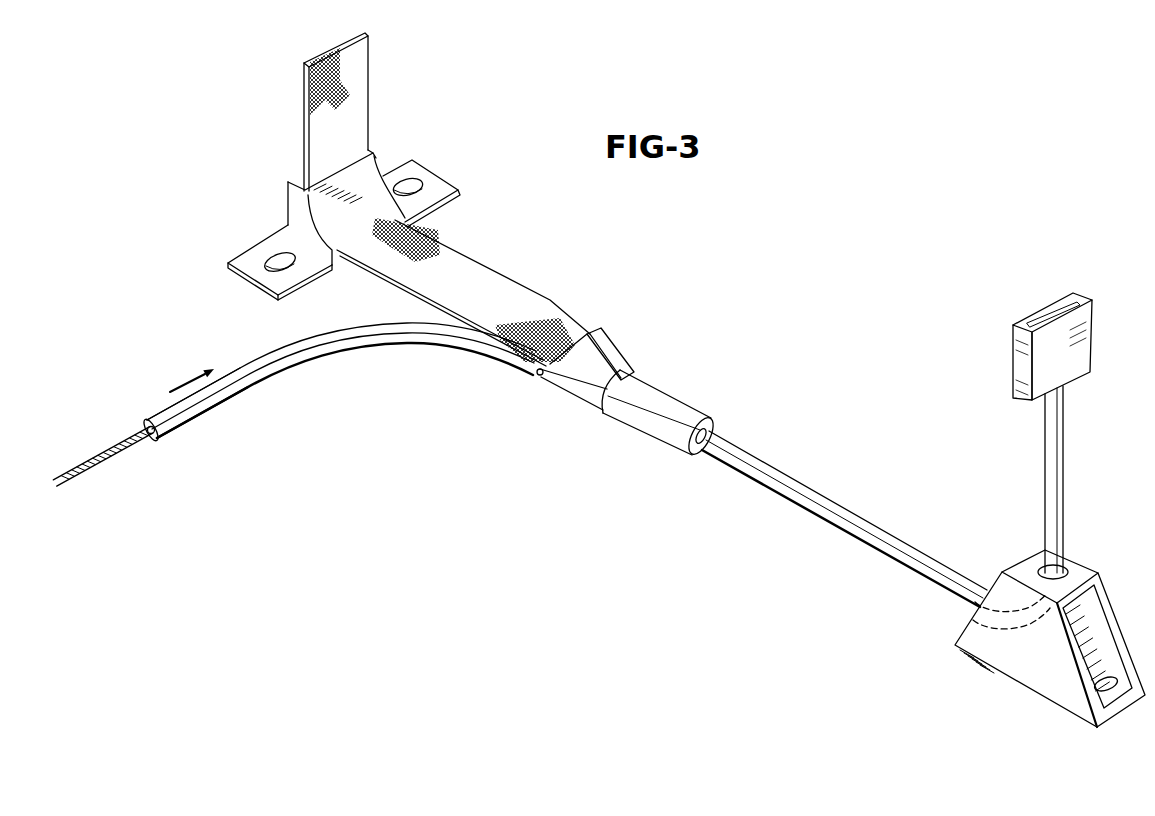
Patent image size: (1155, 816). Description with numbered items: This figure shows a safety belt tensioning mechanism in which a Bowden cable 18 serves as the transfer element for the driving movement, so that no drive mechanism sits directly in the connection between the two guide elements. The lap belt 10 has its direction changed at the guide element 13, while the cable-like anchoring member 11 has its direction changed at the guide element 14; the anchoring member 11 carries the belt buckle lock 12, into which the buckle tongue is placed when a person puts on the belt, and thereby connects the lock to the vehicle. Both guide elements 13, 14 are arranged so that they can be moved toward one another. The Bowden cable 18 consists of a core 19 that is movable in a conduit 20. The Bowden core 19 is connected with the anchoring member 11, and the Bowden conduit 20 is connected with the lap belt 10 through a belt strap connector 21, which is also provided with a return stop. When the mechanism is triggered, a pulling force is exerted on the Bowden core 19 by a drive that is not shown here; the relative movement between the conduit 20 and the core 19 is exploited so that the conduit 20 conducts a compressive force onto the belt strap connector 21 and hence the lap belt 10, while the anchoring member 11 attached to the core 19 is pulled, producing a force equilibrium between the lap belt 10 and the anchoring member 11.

The lap belt 10 is at (304, 130).
The anchoring member 11 is at (833, 508).
The belt buckle lock 12 is at (1083, 337).
The guide element 13 is at (376, 168).
The guide element 14 is at (1018, 567).
The Bowden cable 18 is at (340, 360).
The Bowden core 19 is at (107, 457).
The Bowden conduit 20 is at (187, 417).
The belt strap connector 21 is at (660, 400).